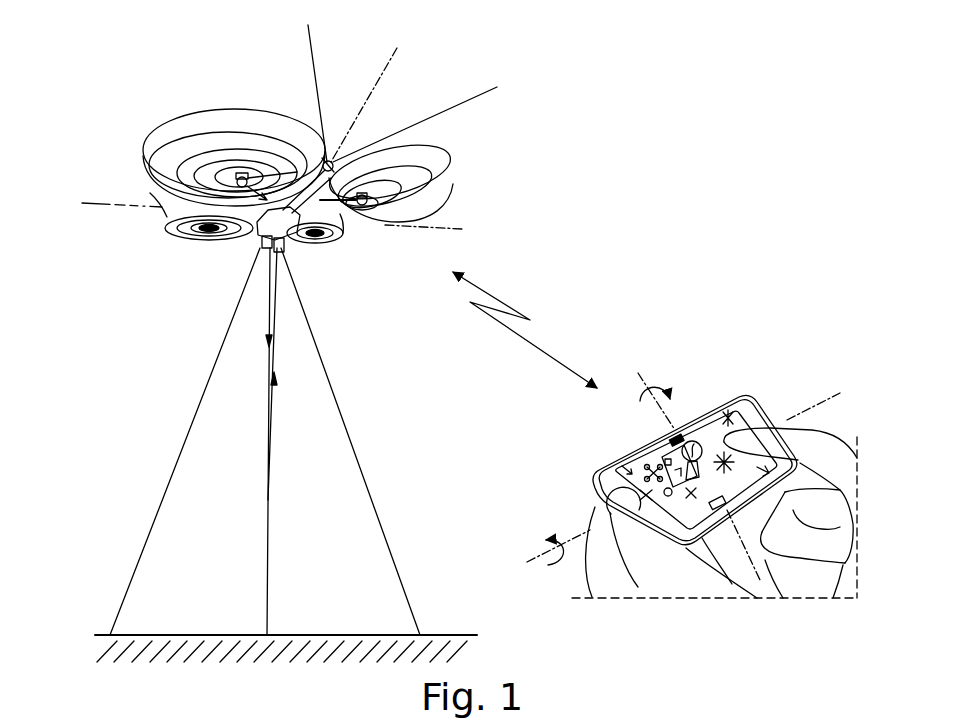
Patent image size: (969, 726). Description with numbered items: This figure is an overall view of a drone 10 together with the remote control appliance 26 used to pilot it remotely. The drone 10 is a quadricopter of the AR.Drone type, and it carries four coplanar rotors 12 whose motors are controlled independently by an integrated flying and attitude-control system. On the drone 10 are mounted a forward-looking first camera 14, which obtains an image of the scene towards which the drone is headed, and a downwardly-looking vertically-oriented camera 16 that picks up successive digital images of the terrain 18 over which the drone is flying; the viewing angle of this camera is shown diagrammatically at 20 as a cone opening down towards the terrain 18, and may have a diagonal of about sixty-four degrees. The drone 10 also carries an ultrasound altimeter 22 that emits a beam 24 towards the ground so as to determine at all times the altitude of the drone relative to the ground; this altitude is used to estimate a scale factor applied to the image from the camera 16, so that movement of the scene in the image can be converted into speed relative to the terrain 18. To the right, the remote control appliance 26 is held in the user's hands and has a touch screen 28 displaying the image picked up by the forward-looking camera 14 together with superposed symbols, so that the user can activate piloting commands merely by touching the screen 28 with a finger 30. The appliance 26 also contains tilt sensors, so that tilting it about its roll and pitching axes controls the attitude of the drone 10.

The drone 10 is at (346, 166).
The rotors 12 is at (175, 168).
The forward-looking first camera 14 is at (340, 160).
The vertically-oriented camera 16 is at (260, 250).
The terrain 18 is at (435, 635).
The viewing angle 20 is at (377, 512).
The ultrasound altimeter 22 is at (282, 252).
The beam 24 is at (273, 437).
The remote control appliance 26 is at (692, 453).
The touch screen 28 is at (687, 440).
The finger 30 is at (788, 427).